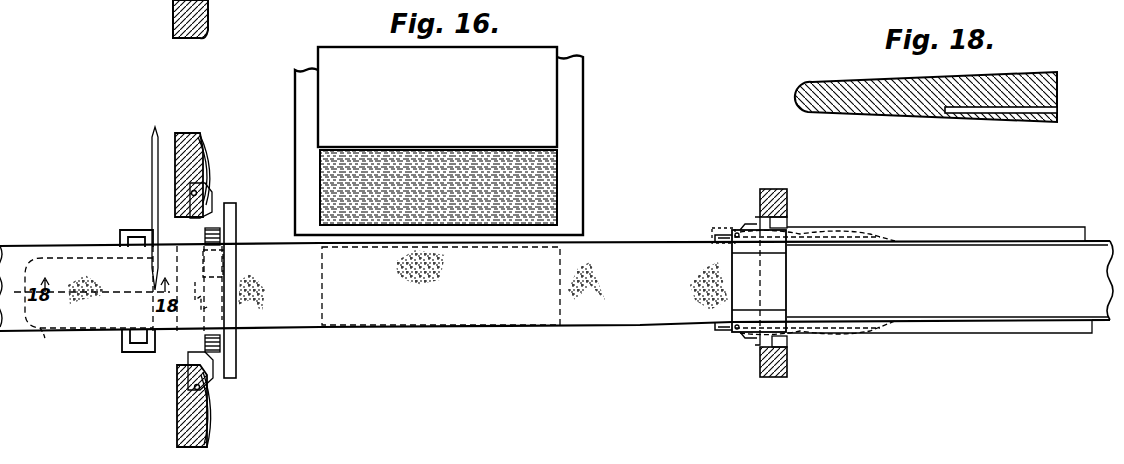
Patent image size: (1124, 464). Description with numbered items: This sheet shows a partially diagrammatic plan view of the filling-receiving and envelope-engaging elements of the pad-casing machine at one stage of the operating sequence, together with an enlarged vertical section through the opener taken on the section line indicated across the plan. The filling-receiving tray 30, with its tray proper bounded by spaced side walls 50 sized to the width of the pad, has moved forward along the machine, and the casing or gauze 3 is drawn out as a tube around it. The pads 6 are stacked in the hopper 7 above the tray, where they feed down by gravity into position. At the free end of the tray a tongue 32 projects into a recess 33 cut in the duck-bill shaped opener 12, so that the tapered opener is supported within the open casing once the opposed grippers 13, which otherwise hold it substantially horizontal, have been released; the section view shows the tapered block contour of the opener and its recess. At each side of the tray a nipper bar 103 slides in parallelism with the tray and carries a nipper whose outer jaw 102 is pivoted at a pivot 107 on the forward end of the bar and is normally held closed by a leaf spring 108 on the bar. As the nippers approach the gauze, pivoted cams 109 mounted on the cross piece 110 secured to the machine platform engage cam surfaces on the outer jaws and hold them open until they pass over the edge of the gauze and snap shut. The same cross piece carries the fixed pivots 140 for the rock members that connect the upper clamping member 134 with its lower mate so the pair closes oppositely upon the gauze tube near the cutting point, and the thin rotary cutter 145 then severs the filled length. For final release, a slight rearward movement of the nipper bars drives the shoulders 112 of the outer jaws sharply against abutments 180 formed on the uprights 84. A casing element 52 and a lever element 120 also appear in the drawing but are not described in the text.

In FIG. 16, the casing supply 3 is at (27, 247).
In FIG. 16, the pad 6 is at (547, 183).
In FIG. 16, the hopper 7 is at (543, 87).
In FIG. 16, the opener 12 is at (47, 335).
In FIG. 18, the opener 12 is at (889, 108).
In FIG. 16, the gripper 13 is at (137, 230).
In FIG. 16, the filling-receiving tray 30 is at (556, 286).
In FIG. 16, the tongue 32 is at (745, 300).
In FIG. 18, the recess 33 is at (1019, 112).
In FIG. 16, the side wall 50 is at (1030, 241).
In FIG. 16, the casing 52 is at (573, 128).
In FIG. 16, the upright 84 is at (776, 192).
In FIG. 16, the outer jaw 102 is at (716, 236).
In FIG. 16, the nipper bar 103 is at (947, 227).
In FIG. 16, the pivot 107 is at (742, 231).
In FIG. 16, the leaf spring 108 is at (812, 233).
In FIG. 16, the cam 109 is at (198, 206).
In FIG. 16, the cross piece 110 is at (200, 136).
In FIG. 16, the shoulder 112 is at (760, 218).
In FIG. 16, the lever 120 is at (209, 175).
In FIG. 16, the upper clamping member 134 is at (237, 262).
In FIG. 16, the fixed pivot 140 is at (220, 232).
In FIG. 16, the rotary cutter 145 is at (152, 168).
In FIG. 16, the abutment 180 is at (783, 222).